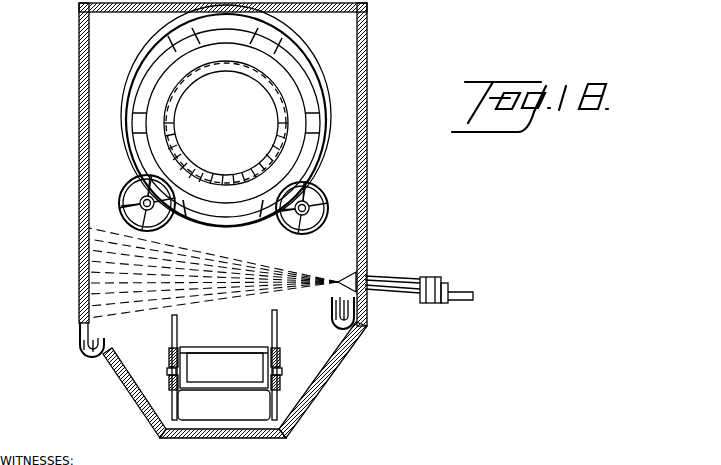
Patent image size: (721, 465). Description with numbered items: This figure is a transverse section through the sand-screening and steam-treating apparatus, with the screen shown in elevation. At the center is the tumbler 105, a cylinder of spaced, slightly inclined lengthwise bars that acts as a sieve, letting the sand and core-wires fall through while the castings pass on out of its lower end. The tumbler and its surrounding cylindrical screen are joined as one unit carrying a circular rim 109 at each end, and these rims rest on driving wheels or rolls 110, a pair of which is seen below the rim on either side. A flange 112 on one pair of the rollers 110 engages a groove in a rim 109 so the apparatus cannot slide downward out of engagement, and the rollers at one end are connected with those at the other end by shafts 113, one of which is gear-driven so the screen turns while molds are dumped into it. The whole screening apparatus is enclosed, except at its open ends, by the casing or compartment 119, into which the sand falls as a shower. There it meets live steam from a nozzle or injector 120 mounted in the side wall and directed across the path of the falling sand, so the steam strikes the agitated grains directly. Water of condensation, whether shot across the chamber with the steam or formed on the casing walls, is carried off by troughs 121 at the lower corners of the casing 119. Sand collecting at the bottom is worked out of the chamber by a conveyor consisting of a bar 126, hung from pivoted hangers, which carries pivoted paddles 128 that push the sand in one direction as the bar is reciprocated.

The tumbler 105 is at (285, 103).
The circular rim 109 is at (319, 158).
The driving wheels or rolls 110 is at (119, 203).
The flange 112 is at (151, 210).
The shafts 113 is at (158, 211).
The casing or compartment 119 is at (79, 103).
The steam nozzles or injectors 120 is at (366, 300).
The troughs 121 is at (90, 360).
The bar 126 is at (172, 326).
The pivoted paddles 128 is at (260, 407).